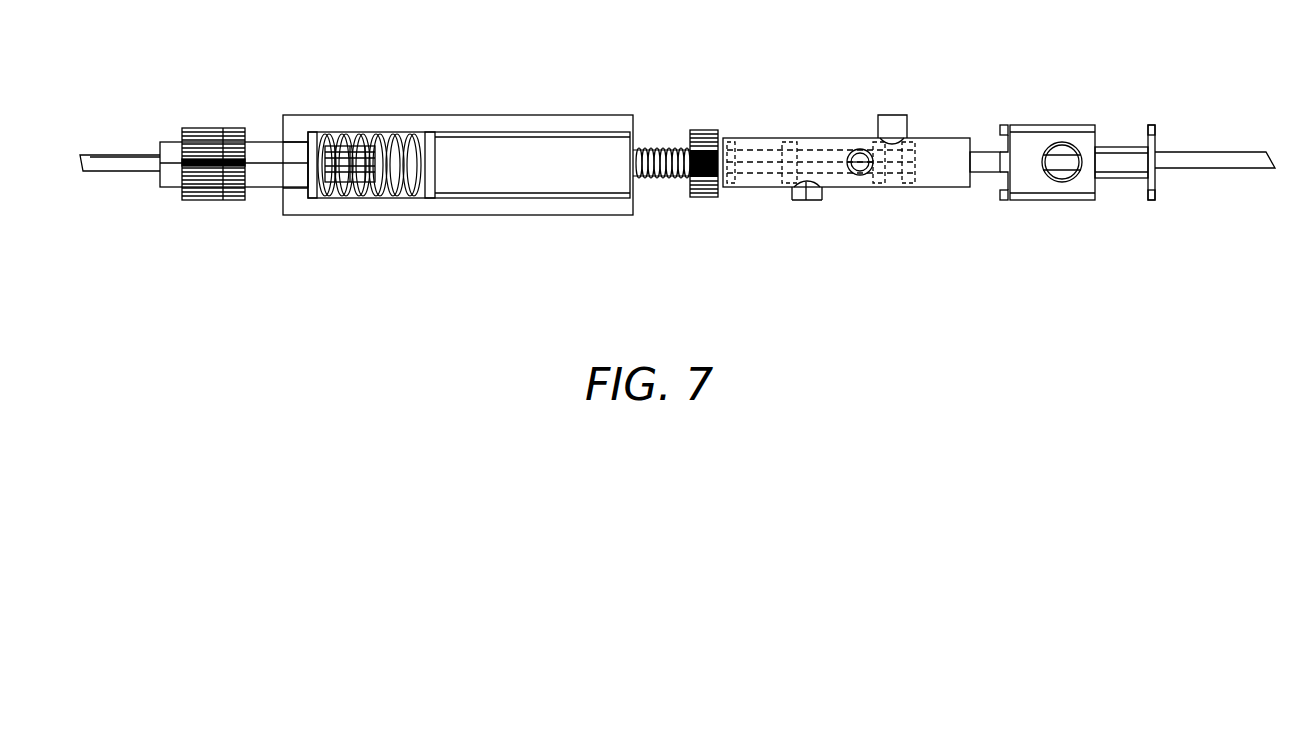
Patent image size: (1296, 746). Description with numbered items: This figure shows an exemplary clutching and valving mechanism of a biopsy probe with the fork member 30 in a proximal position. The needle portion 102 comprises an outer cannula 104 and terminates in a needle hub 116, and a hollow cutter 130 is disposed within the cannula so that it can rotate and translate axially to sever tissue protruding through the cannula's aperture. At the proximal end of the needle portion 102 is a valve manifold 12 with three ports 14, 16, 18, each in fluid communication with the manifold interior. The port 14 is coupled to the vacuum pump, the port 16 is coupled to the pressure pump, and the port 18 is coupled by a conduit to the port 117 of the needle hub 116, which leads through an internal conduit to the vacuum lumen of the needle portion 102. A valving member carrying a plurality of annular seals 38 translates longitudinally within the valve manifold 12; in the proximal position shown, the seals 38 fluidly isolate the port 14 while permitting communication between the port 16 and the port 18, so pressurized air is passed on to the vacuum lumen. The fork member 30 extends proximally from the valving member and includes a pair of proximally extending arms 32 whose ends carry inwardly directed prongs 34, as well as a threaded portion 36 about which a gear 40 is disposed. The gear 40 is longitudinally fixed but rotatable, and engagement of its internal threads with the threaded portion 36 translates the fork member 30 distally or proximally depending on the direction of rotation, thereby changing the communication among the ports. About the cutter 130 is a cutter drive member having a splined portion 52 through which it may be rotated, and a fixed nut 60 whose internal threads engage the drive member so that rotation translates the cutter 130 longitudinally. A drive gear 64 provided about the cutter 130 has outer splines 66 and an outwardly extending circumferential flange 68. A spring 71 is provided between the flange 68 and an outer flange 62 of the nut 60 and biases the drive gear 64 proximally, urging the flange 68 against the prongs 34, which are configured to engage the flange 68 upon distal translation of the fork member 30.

The valve manifold 12 is at (942, 135).
The port 14 is at (900, 126).
The port 16 is at (824, 200).
The port 18 is at (858, 176).
The fork member 30 is at (556, 72).
The arms 32 is at (582, 115).
The prongs 34 is at (270, 128).
The threaded portion 36 is at (656, 196).
The annular seals 38 is at (746, 130).
The gear 40 is at (702, 200).
The splined portion 52 is at (352, 188).
The nut 60 is at (522, 192).
The outer flange 62 is at (440, 205).
The drive gear 64 is at (165, 188).
The outer splines 66 is at (205, 128).
The circumferential flange 68 is at (310, 175).
The spring 71 is at (395, 130).
The needle portion 102 is at (1205, 118).
The outer cannula 104 is at (1197, 184).
The needle hub 116 is at (1112, 140).
The port 117 is at (1028, 142).
The cutter 130 is at (122, 157).